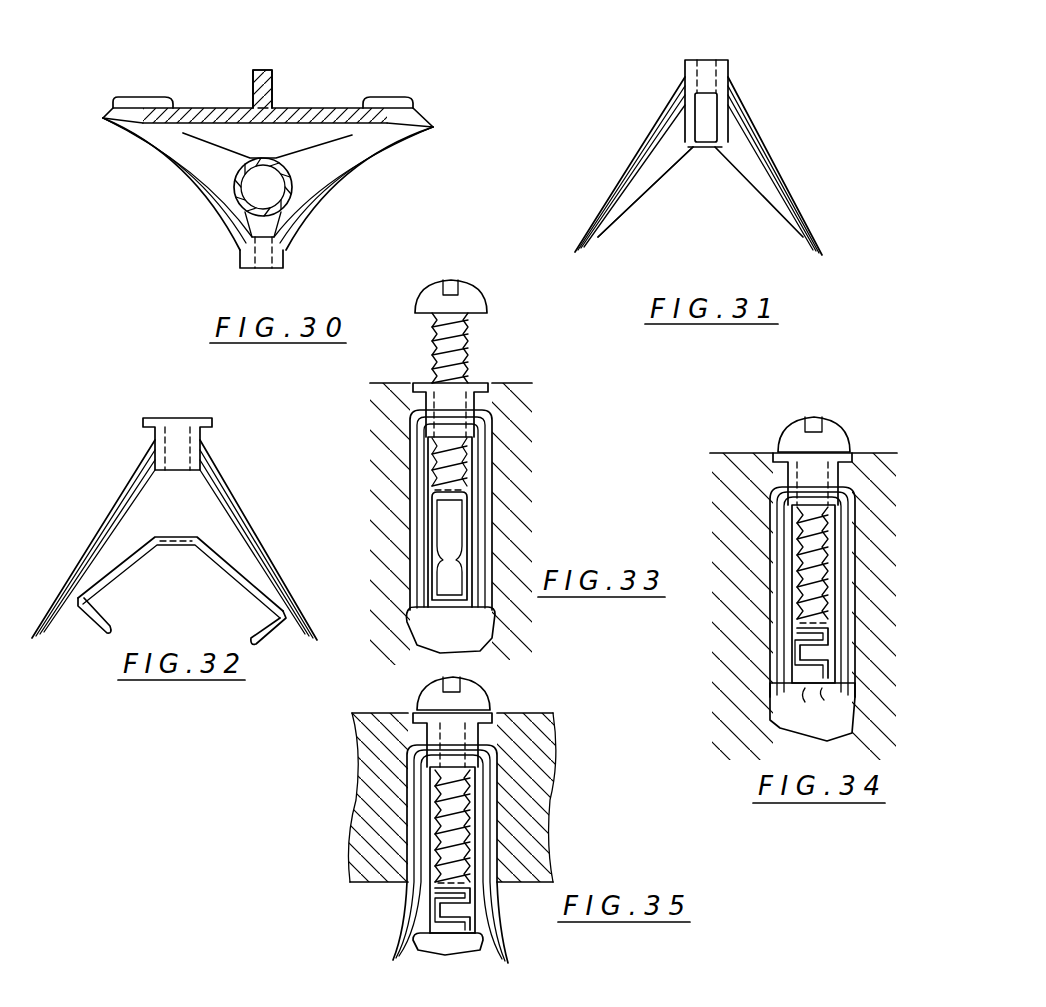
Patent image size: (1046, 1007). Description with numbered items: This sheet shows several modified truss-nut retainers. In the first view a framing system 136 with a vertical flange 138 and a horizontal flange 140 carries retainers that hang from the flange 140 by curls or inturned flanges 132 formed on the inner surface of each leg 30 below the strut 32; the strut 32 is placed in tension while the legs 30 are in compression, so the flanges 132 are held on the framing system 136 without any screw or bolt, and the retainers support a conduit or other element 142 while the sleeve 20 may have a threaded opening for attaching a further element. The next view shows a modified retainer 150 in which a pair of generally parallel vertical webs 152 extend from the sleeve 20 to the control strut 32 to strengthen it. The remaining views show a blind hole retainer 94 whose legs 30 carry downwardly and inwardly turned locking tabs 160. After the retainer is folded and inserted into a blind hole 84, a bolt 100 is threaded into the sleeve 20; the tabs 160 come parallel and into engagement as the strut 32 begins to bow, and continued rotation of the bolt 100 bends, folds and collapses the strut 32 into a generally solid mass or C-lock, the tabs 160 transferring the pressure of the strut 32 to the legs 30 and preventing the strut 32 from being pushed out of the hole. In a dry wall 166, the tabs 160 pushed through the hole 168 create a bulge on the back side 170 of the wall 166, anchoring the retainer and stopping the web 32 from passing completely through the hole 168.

In FIG. 30, the sleeve 20 is at (280, 258).
In FIG. 31, the sleeve 20 is at (722, 70).
In FIG. 30, the legs 30 is at (212, 197).
In FIG. 31, the legs 30 is at (622, 177).
In FIG. 32, the legs 30 is at (98, 532).
In FIG. 30, the strut 32 is at (298, 140).
In FIG. 31, the strut 32 is at (750, 184).
In FIG. 32, the strut 32 is at (140, 560).
In FIG. 34, the strut 32 is at (797, 650).
In FIG. 33, the blind hole 84 is at (427, 637).
In FIG. 32, the blind hole retainer 94 is at (257, 518).
In FIG. 33, the blind hole retainer 94 is at (410, 452).
In FIG. 34, the blind hole retainer 94 is at (770, 550).
In FIG. 35, the blind hole retainer 94 is at (407, 837).
In FIG. 33, the bolt 100 is at (475, 300).
In FIG. 34, the bolt 100 is at (830, 433).
In FIG. 35, the bolt 100 is at (468, 696).
In FIG. 30, the inturned flange 132 is at (141, 100).
In FIG. 30, the framing system 136 is at (273, 92).
In FIG. 30, the vertical flange 138 is at (253, 78).
In FIG. 30, the horizontal flange 140 is at (195, 105).
In FIG. 30, the conduit 142 is at (297, 183).
In FIG. 31, the modified retainer 150 is at (780, 162).
In FIG. 31, the vertical webs 152 is at (690, 120).
In FIG. 32, the locking tabs 160 is at (100, 622).
In FIG. 33, the locking tabs 160 is at (450, 593).
In FIG. 34, the locking tabs 160 is at (812, 712).
In FIG. 35, the locking tabs 160 is at (443, 940).
In FIG. 35, the dry wall 166 is at (373, 728).
In FIG. 35, the hole 168 is at (497, 737).
In FIG. 35, the back side 170 is at (523, 886).